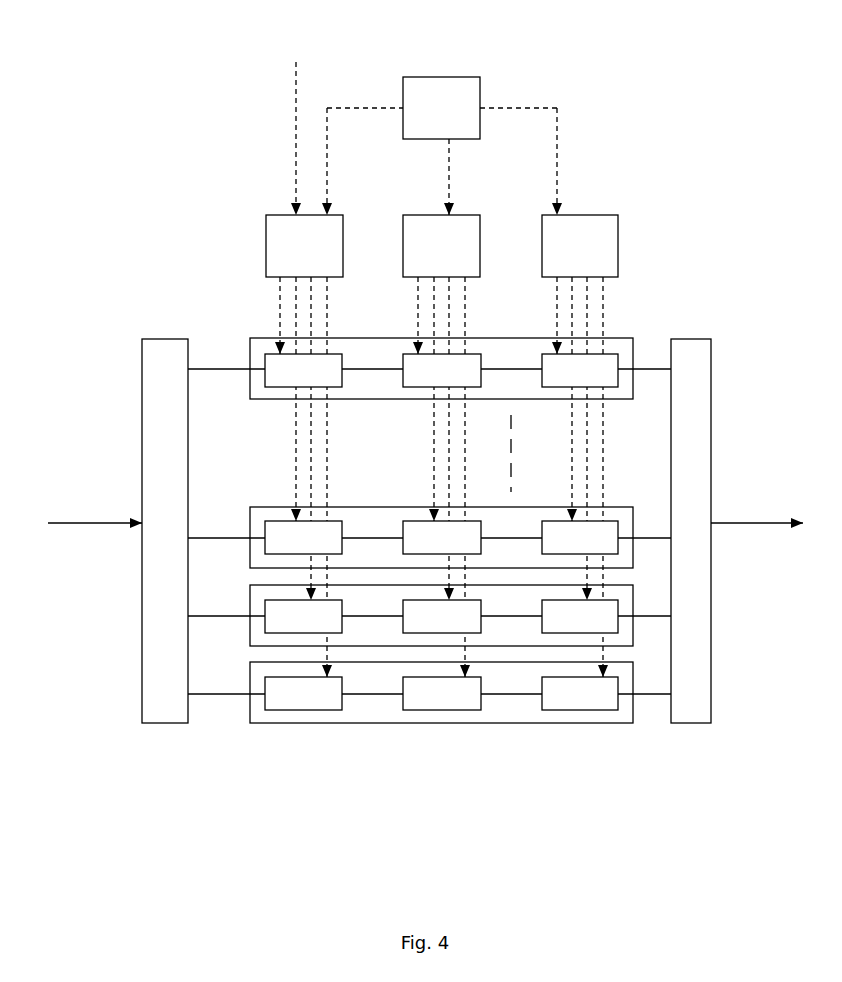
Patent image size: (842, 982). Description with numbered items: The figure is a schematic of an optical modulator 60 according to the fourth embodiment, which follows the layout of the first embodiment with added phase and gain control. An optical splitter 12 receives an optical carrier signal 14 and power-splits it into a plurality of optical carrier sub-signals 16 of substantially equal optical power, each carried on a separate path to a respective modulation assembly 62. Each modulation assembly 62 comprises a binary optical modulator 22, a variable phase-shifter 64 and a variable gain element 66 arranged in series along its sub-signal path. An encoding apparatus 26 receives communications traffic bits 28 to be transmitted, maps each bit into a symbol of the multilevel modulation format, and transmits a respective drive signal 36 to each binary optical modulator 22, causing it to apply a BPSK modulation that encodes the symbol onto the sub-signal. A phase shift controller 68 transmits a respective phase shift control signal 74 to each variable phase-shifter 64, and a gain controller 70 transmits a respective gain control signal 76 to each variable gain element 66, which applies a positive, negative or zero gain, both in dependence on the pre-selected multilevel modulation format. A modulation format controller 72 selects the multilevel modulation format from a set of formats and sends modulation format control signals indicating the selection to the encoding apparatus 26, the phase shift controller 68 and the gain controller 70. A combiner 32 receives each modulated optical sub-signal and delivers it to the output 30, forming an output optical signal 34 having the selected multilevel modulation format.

The optical splitter 12 is at (158, 712).
The optical carrier signal 14 is at (96, 523).
The optical carrier sub-signals 16 is at (202, 698).
The binary optical modulator 22 is at (280, 369).
The encoding apparatus 26 is at (281, 247).
The communications traffic bits 28 is at (295, 185).
The output 30 is at (727, 540).
The combiner 32 is at (695, 353).
The output optical signal 34 is at (773, 523).
The drive signal 36 is at (296, 461).
The optical modulator 60 is at (637, 58).
The modulation assembly 62 is at (497, 707).
The phase-shifter 64 is at (572, 692).
The gain element 66 is at (428, 710).
The phase shift controller 68 is at (603, 225).
The gain controller 70 is at (434, 231).
The modulation format controller 72 is at (448, 77).
The phase shift control signal 74 is at (603, 322).
The gain control signal 76 is at (418, 323).